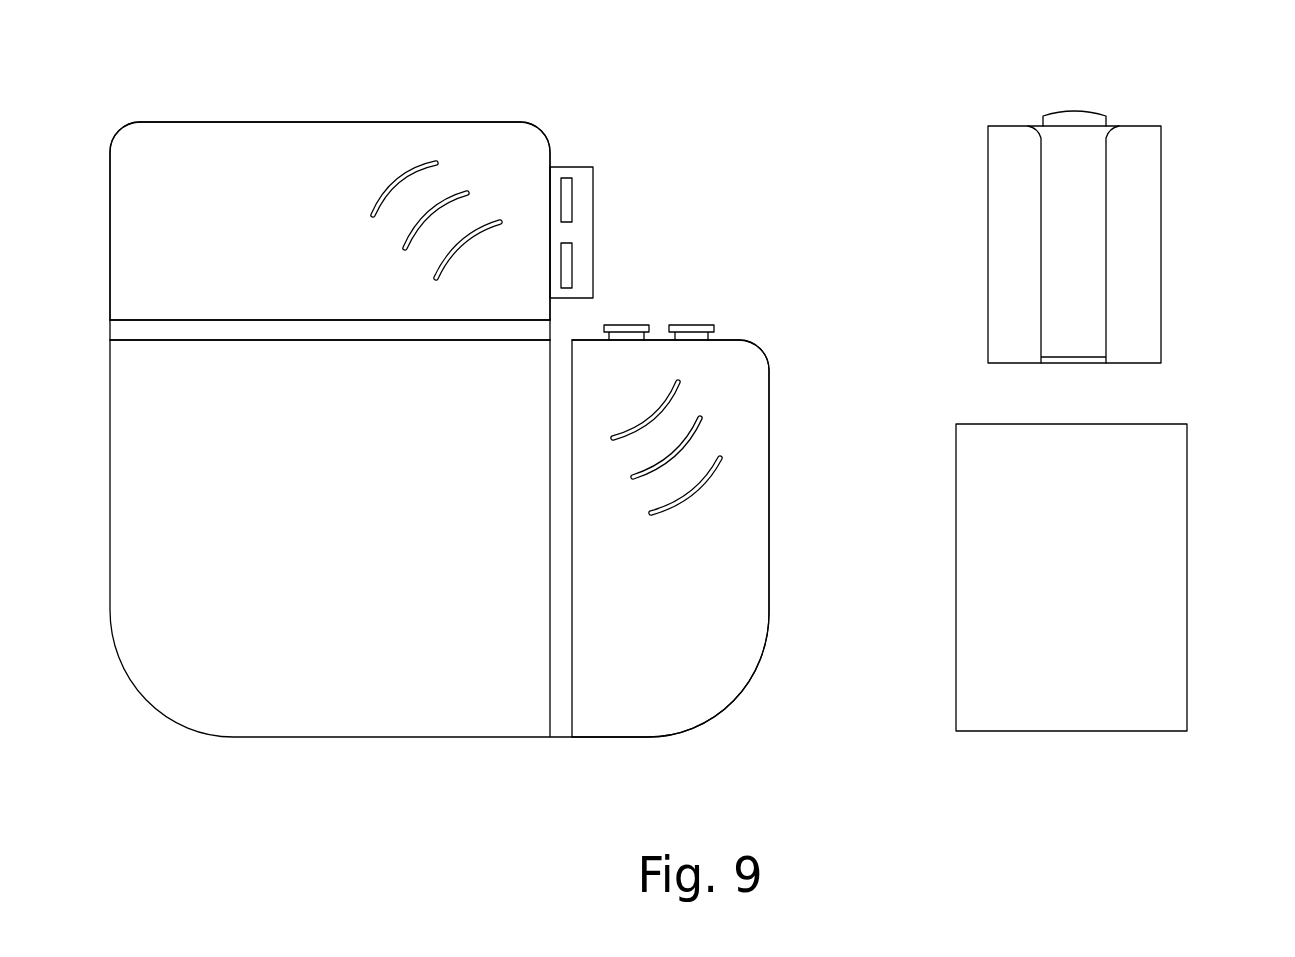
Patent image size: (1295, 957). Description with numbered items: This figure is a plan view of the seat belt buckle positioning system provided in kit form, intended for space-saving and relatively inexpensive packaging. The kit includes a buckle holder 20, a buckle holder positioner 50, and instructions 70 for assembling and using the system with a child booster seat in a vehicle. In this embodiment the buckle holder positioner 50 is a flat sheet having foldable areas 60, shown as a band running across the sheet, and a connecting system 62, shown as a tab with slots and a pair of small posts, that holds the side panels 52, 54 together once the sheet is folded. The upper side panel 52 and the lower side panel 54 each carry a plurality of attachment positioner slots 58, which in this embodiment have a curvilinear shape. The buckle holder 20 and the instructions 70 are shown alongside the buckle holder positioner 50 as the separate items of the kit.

The buckle holder 20 is at (988, 171).
The buckle holder positioner 50 is at (278, 737).
The side panel 52 is at (331, 121).
The side panel 54 is at (769, 473).
The attachment positioner slots 58 is at (440, 262).
The foldable areas 60 is at (560, 483).
The connecting system 62 is at (618, 325).
The instructions 70 is at (1187, 532).